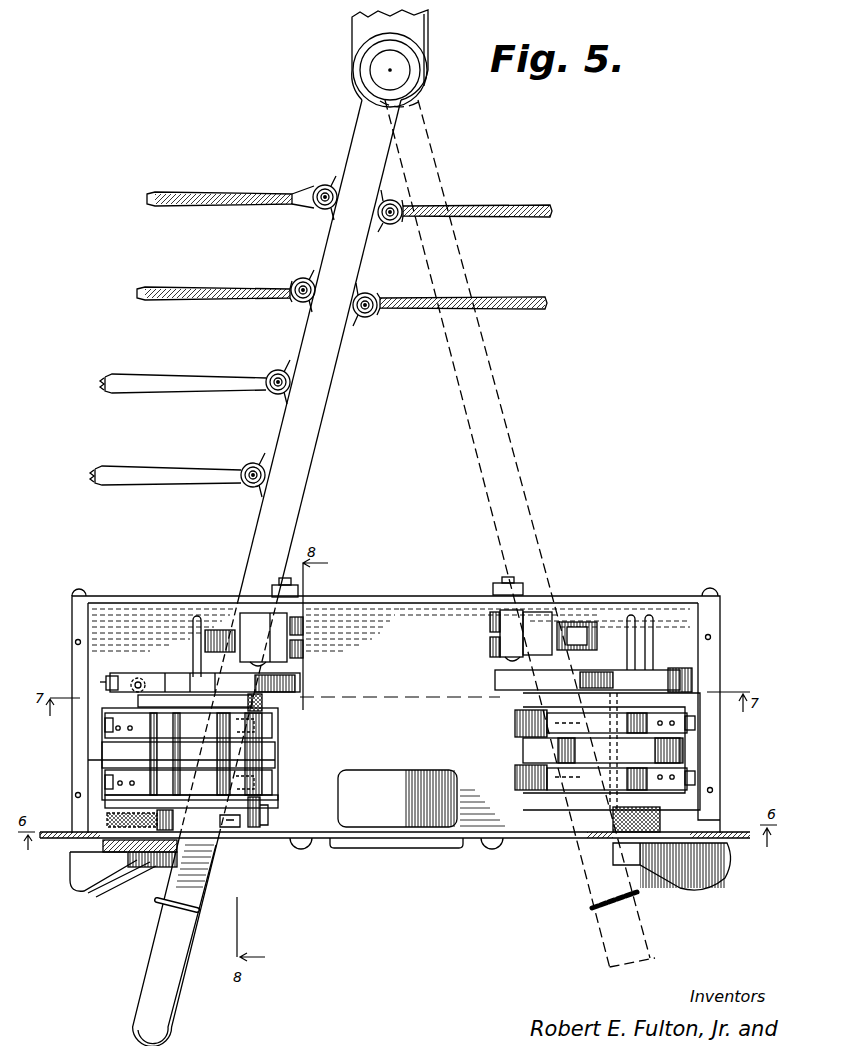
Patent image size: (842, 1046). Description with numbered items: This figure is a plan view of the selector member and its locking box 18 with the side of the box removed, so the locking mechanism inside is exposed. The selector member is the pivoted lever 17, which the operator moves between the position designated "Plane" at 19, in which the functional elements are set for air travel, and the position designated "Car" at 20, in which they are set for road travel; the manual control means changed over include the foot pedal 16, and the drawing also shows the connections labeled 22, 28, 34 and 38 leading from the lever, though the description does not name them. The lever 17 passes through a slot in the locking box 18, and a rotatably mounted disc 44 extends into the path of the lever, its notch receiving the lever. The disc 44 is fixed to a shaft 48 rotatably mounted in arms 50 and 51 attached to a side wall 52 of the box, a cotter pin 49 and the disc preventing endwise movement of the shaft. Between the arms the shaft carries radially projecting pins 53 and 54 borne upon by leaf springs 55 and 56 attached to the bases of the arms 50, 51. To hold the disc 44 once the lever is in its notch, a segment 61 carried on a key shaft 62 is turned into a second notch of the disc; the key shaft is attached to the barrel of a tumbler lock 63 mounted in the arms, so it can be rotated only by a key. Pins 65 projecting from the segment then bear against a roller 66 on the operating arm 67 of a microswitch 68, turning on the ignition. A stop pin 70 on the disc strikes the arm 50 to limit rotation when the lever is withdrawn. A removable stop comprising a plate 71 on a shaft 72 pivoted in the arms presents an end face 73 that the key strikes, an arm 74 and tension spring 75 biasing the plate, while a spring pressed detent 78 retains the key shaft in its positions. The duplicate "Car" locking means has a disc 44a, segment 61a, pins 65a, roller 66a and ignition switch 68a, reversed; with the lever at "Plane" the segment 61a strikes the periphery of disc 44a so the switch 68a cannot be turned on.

The foot pedal 16 is at (76, 870).
The selector lever 17 is at (314, 452).
The locking box 18 is at (152, 597).
The "Plane" designation 19 is at (55, 840).
The "Car" designation 20 is at (738, 838).
The steering control rod 22 is at (164, 471).
The pedals control rod 28 is at (180, 381).
The blower control cable 34 is at (204, 289).
The motor control cable 38 is at (229, 193).
The disc 44 is at (297, 684).
The disc 44a is at (495, 683).
The shaft 48 is at (258, 758).
The cotter pin 49 is at (230, 830).
The arm 50 is at (181, 700).
The arm 51 is at (266, 826).
The side wall 52 is at (78, 745).
The pin 53 is at (283, 733).
The pin 54 is at (283, 779).
The leaf spring 55 is at (273, 720).
The leaf spring 56 is at (279, 795).
The segment 61 is at (120, 676).
The segment 61a is at (683, 661).
The key shaft 62 is at (140, 748).
The tumbler lock 63 is at (117, 760).
The pins 65 is at (194, 626).
The pins 65a is at (652, 643).
The roller 66 is at (206, 640).
The roller 66a is at (600, 628).
The operating arm 67 is at (241, 632).
The microswitch 68 is at (303, 637).
The ignition switch 68a is at (492, 637).
The stop pin 70 is at (263, 700).
The stop plate 71 is at (160, 866).
The shaft 72 is at (162, 888).
The end face 73 is at (138, 880).
The arm 74 is at (130, 812).
The tension spring 75 is at (137, 856).
The spring pressed detent 78 is at (142, 676).